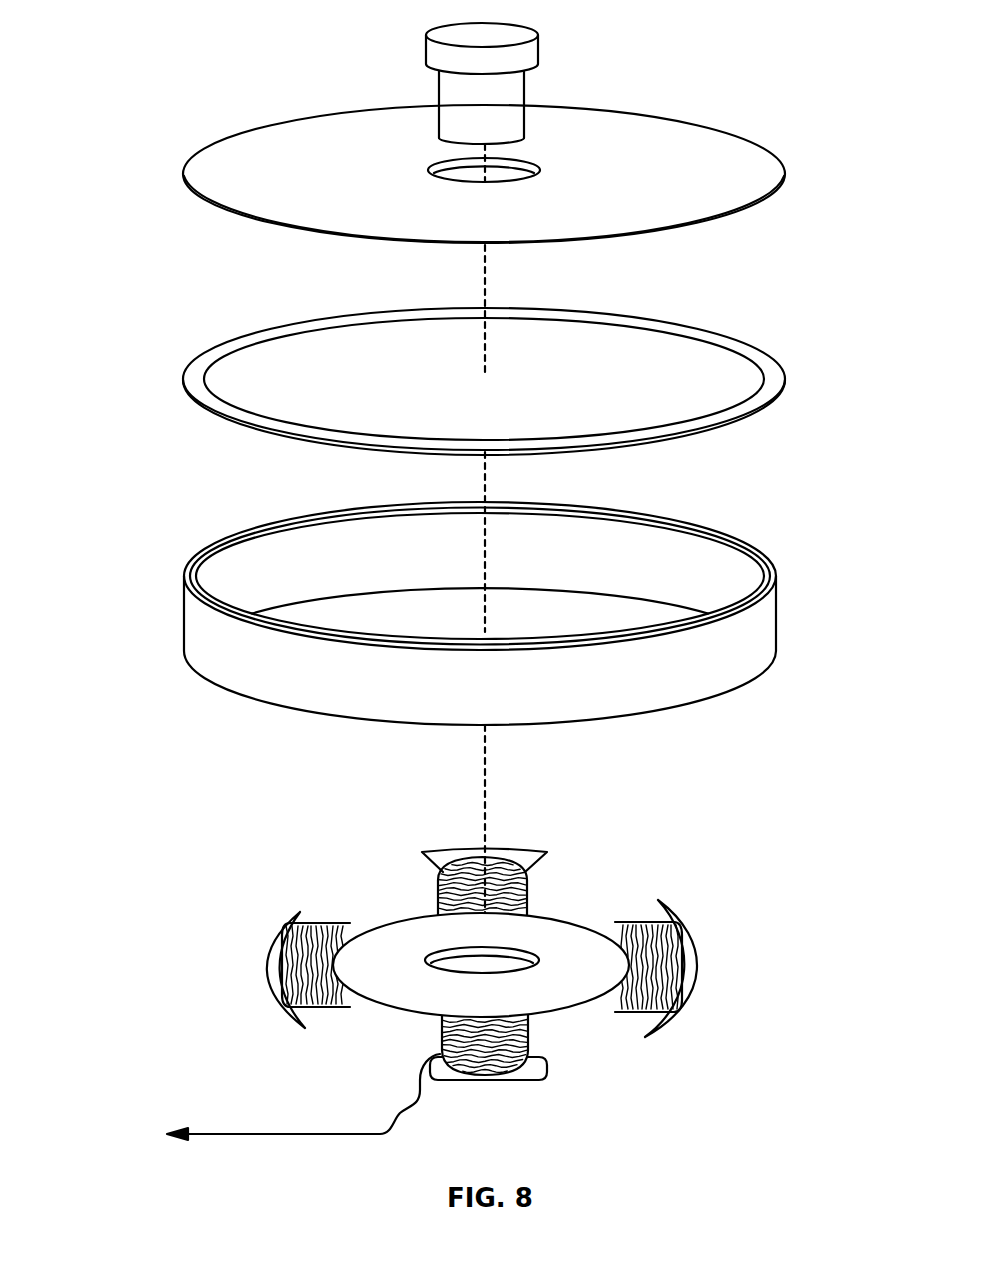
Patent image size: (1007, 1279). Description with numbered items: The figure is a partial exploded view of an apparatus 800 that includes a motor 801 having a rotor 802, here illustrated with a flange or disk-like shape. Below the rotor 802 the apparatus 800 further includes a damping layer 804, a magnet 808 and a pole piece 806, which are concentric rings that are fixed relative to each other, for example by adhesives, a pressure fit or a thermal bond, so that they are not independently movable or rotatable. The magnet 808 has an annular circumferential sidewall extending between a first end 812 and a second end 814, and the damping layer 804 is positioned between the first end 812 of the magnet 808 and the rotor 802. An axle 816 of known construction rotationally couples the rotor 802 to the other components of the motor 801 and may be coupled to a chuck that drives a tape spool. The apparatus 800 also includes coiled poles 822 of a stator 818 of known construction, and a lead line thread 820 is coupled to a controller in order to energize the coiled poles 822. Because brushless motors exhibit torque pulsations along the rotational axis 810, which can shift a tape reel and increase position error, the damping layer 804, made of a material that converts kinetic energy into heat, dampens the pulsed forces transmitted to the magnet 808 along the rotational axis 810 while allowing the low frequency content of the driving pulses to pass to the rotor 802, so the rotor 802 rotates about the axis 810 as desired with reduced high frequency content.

The apparatus 800 is at (252, 106).
The motor 801 is at (96, 392).
The rotor 802 is at (786, 175).
The damping layer 804 is at (786, 384).
The pole piece 806 is at (257, 665).
The magnet 808 is at (247, 568).
The rotational axis 810 is at (486, 297).
The first end 812 is at (724, 535).
The second end 814 is at (736, 710).
The axle 816 is at (538, 62).
The stator 818 is at (578, 913).
The lead line thread 820 is at (292, 1134).
The coiled poles 822 is at (697, 933).